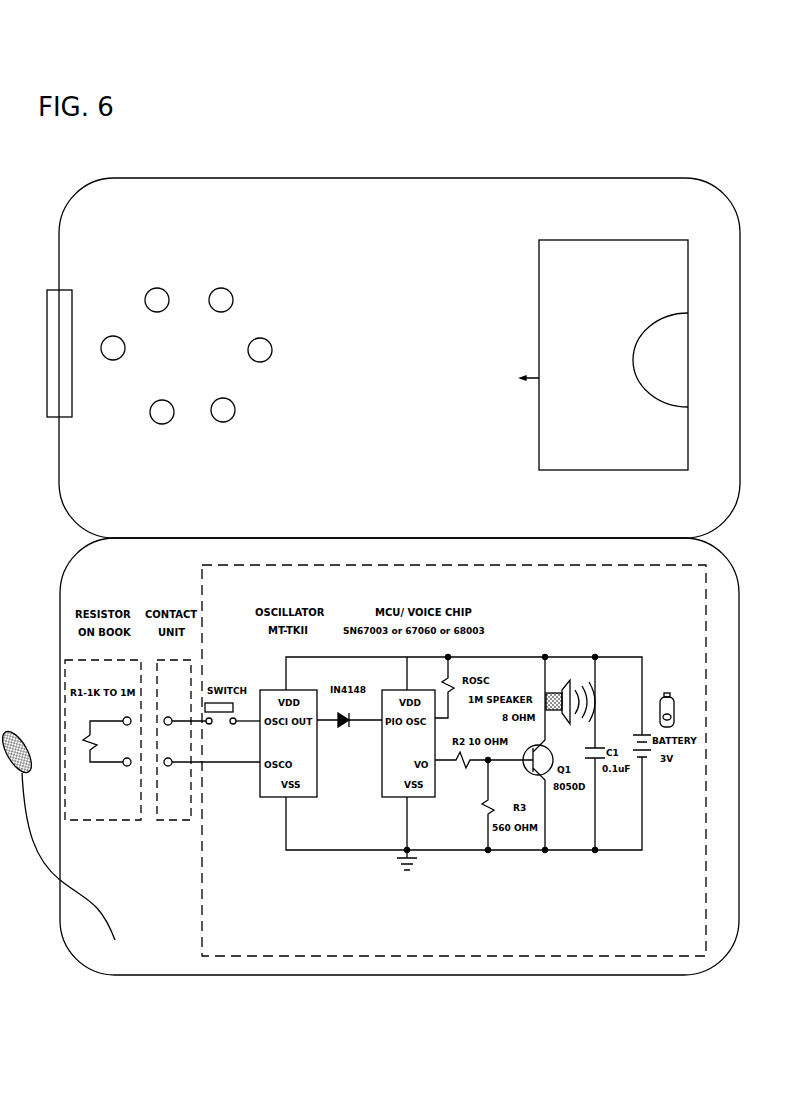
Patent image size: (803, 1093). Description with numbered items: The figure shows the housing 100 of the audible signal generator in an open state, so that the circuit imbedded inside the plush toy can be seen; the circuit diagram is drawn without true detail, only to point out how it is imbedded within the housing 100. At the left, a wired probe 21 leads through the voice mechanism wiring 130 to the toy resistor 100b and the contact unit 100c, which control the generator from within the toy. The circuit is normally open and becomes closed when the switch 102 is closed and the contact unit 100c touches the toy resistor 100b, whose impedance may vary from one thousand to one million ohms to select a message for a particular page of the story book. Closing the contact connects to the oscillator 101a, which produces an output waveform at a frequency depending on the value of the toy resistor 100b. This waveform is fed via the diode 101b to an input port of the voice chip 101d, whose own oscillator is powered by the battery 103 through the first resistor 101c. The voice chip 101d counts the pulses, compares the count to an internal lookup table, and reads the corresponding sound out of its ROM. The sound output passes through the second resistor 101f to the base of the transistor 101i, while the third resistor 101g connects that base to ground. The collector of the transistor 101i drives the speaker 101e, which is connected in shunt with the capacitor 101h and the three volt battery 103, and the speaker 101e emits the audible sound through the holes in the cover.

The pen 21 is at (22, 735).
The housing 100 is at (201, 590).
The toy resistor 100b is at (100, 822).
The contact unit 100c is at (172, 822).
The switch 102 is at (245, 715).
The oscillator 101a is at (264, 799).
The diode 101b is at (345, 730).
The first resistor 101c is at (446, 684).
The voice chip 101d is at (430, 798).
The speaker 101e is at (552, 692).
The second resistor 101f is at (462, 790).
The third resistor 101g is at (480, 818).
The capacitor 101h is at (600, 742).
The transistor 101i is at (548, 785).
The battery 103 is at (650, 720).
The voice mechanism wiring 130 is at (113, 917).